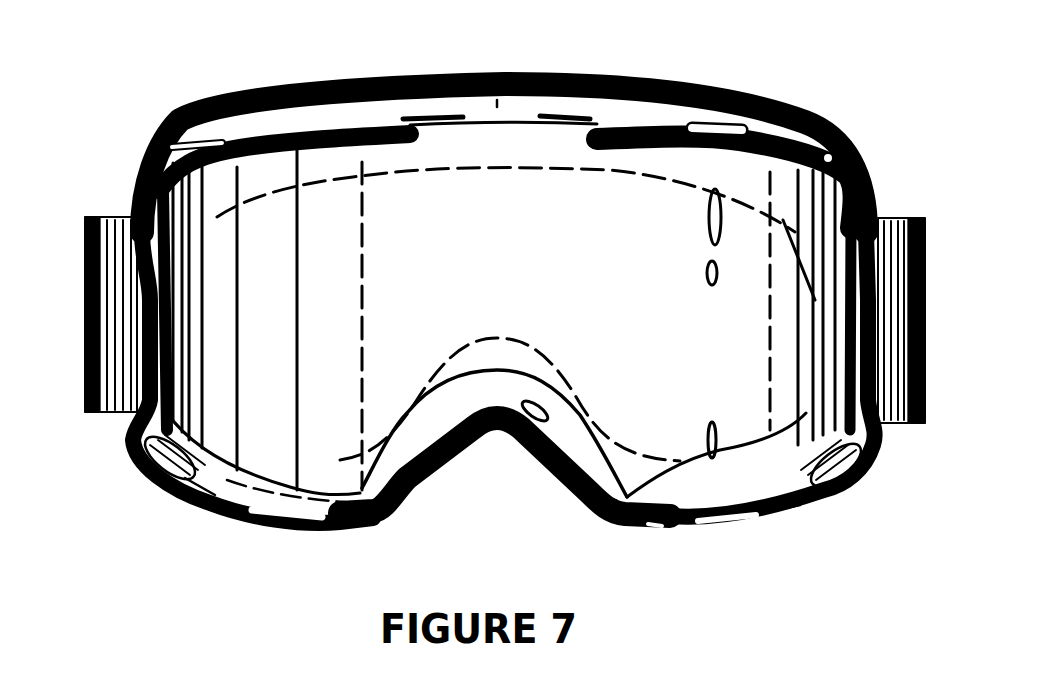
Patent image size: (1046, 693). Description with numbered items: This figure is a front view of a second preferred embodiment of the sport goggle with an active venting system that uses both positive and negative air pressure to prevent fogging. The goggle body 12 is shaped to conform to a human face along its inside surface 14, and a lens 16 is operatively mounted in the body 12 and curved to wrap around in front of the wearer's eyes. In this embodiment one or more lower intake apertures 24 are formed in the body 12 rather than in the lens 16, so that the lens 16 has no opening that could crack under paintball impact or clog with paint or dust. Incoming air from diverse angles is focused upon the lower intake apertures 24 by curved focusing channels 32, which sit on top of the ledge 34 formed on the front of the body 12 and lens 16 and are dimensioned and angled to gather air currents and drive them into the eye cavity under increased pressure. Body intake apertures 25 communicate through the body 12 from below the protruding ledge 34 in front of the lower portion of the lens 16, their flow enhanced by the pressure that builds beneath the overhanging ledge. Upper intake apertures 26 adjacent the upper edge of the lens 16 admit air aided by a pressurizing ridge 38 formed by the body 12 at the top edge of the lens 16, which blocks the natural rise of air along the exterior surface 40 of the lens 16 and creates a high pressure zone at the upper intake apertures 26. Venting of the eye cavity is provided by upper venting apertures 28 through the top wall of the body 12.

The goggle body 12 is at (136, 198).
The inside surface 14 is at (152, 148).
The lens 16 is at (682, 378).
The lower intake aperture 24 is at (123, 440).
The body intake aperture 25 is at (213, 485).
The upper intake aperture 26 is at (383, 118).
The upper venting aperture 28 is at (733, 93).
The focusing channel 32 is at (150, 483).
The ledge 34 is at (200, 483).
The pressurizing ridge 38 is at (497, 107).
The exterior surface 40 is at (560, 193).